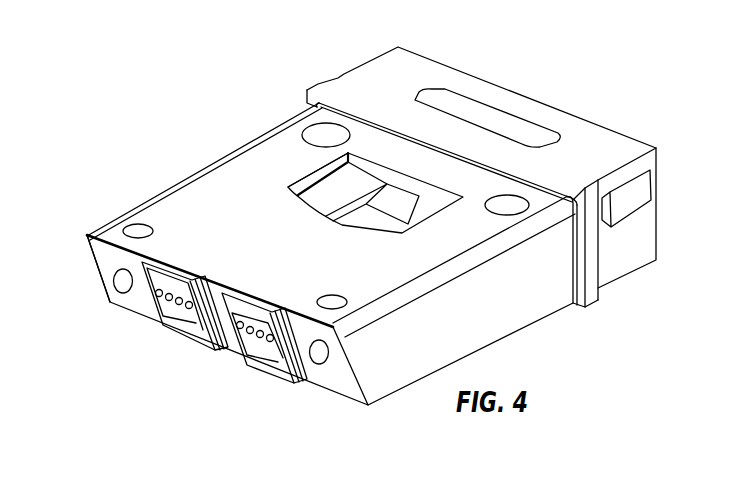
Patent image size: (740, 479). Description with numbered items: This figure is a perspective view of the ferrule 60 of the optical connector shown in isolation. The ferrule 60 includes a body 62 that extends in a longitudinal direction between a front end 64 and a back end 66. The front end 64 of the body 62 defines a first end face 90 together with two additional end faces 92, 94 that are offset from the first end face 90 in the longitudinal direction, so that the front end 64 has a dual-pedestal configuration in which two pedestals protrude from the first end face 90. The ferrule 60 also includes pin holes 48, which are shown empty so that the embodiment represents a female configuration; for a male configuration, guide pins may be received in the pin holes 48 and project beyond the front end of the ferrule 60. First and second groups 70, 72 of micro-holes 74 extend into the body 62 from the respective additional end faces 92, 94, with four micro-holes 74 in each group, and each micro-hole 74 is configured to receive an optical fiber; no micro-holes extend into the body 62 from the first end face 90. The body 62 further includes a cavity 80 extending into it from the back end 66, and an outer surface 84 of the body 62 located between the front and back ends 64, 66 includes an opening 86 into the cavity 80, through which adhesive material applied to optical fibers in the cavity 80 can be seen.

The ferrule 60 is at (227, 112).
The body 62 is at (188, 177).
The front end 64 is at (87, 237).
The back end 66 is at (398, 47).
The pin holes 48 is at (113, 262).
The first group of micro-holes 70 is at (177, 313).
The second group of micro-holes 72 is at (253, 320).
The micro-holes 74 is at (169, 293).
The cavity 80 is at (353, 183).
The outer surface 84 is at (494, 182).
The opening 86 is at (313, 173).
The first end face 90 is at (346, 381).
The additional end face 92 is at (192, 331).
The additional end face 94 is at (278, 366).